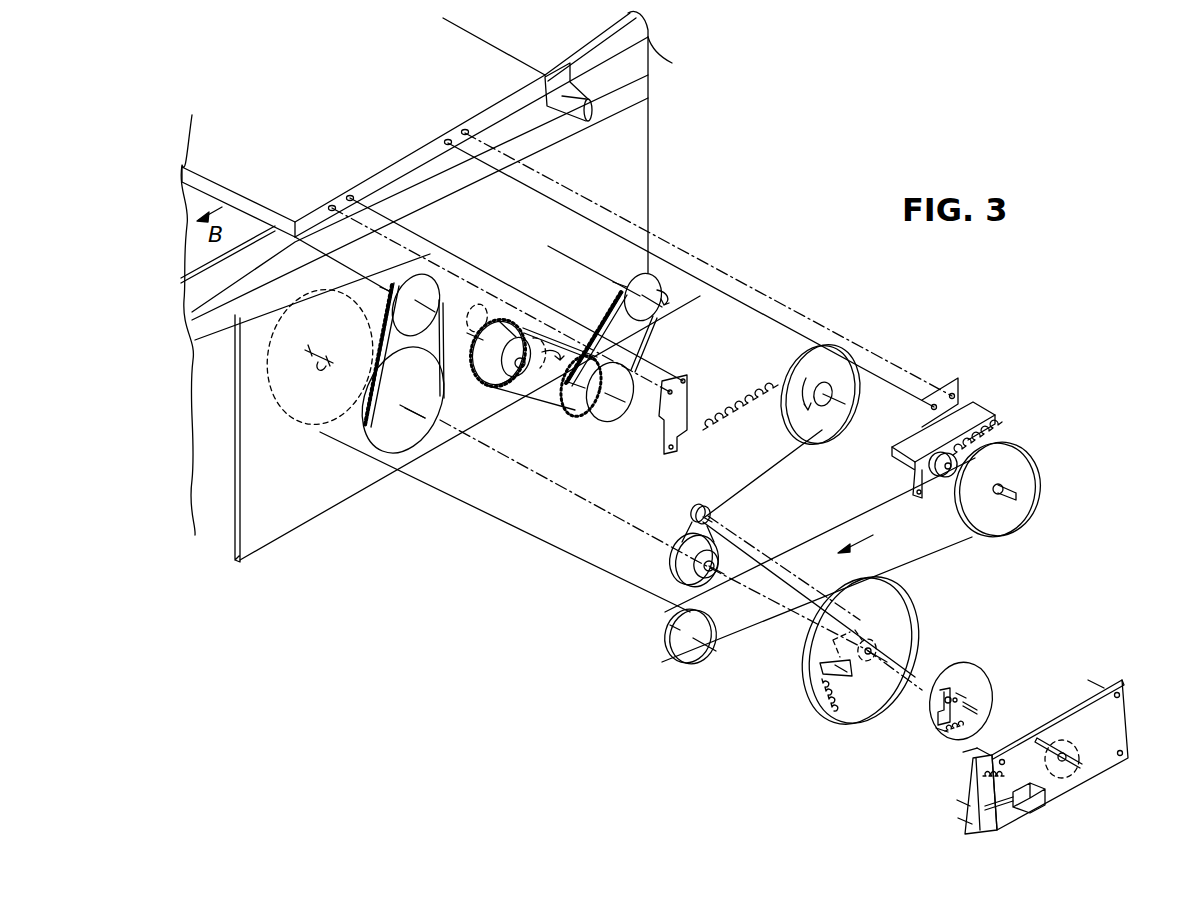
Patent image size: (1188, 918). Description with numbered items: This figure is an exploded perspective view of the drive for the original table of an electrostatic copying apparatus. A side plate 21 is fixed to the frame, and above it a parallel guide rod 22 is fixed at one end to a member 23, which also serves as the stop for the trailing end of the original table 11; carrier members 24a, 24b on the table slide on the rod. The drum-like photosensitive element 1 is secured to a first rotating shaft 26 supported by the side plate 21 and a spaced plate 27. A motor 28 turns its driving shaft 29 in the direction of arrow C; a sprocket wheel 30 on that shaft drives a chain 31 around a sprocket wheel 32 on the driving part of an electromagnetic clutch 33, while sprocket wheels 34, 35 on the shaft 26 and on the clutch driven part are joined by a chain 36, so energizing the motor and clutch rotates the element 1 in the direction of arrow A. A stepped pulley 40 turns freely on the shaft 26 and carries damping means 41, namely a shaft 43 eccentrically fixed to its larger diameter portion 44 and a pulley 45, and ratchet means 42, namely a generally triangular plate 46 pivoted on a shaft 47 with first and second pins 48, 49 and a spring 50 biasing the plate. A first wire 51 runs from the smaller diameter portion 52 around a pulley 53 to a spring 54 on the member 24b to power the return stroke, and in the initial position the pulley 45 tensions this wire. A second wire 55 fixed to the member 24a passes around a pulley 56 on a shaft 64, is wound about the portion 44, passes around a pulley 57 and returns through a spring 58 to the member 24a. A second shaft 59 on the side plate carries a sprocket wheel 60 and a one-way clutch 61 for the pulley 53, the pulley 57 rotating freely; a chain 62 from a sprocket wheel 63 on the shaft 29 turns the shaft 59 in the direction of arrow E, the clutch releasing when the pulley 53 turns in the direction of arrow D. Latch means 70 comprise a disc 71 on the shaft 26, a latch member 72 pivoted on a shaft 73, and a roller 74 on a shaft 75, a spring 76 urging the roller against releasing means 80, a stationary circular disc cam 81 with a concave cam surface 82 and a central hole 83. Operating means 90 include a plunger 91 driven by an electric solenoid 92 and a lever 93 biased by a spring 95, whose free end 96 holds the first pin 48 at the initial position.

The photosensitive element 1 is at (290, 373).
The original table 11 is at (473, 72).
The side plate 21 is at (632, 183).
The guide rod 22 is at (543, 123).
The member 23 is at (592, 112).
The carrier member 24a is at (957, 425).
The carrier member 24b is at (700, 296).
The first rotating shaft 26 is at (418, 405).
The plate 27 is at (1113, 712).
The motor 28 is at (485, 300).
The driving shaft 29 is at (686, 374).
The sprocket wheel 30 is at (582, 397).
The chain 31 is at (553, 393).
The sprocket wheel 32 is at (478, 398).
The electromagnetic clutch 33 is at (497, 397).
The sprocket wheel 34 is at (383, 425).
The sprocket wheel 35 is at (407, 318).
The chain 36 is at (362, 398).
The stepped pulley 40 is at (925, 603).
The damping means 41 is at (725, 518).
The ratchet means 42 is at (853, 698).
The shaft 43 is at (709, 518).
The larger diameter portion 44 is at (833, 712).
The pulley 45 is at (701, 510).
The triangular plate 46 is at (822, 663).
The shaft 47 is at (857, 676).
The first pin 48 is at (823, 672).
The second pin 49 is at (847, 682).
The spring 50 is at (820, 697).
The first wire 51 is at (790, 457).
The smaller diameter portion 52 is at (680, 586).
The pulley 53 is at (837, 367).
The spring 54 is at (786, 372).
The second wire 55 is at (848, 527).
The pulley 56 is at (685, 645).
The pulley 57 is at (1012, 463).
The spring 58 is at (987, 428).
The second shaft 59 is at (625, 283).
The sprocket wheel 60 is at (662, 330).
The one-way clutch 61 is at (920, 393).
The chain 62 is at (628, 372).
The sprocket wheel 63 is at (605, 413).
The shaft 64 is at (705, 652).
The latch means 70 is at (990, 658).
The disc 71 is at (979, 703).
The latch member 72 is at (938, 732).
The shaft 73 is at (952, 692).
The roller 74 is at (965, 700).
The shaft 75 is at (935, 718).
The spring 76 is at (957, 732).
The releasing means 80 is at (1083, 740).
The circular disc cam 81 is at (1067, 742).
The concave cam surface 82 is at (1063, 770).
The central hole 83 is at (1080, 757).
The operating means 90 is at (1045, 811).
The plunger 91 is at (988, 818).
The electric solenoid 92 is at (1032, 803).
The lever 93 is at (958, 820).
The spring 95 is at (983, 756).
The free end 96 is at (987, 750).